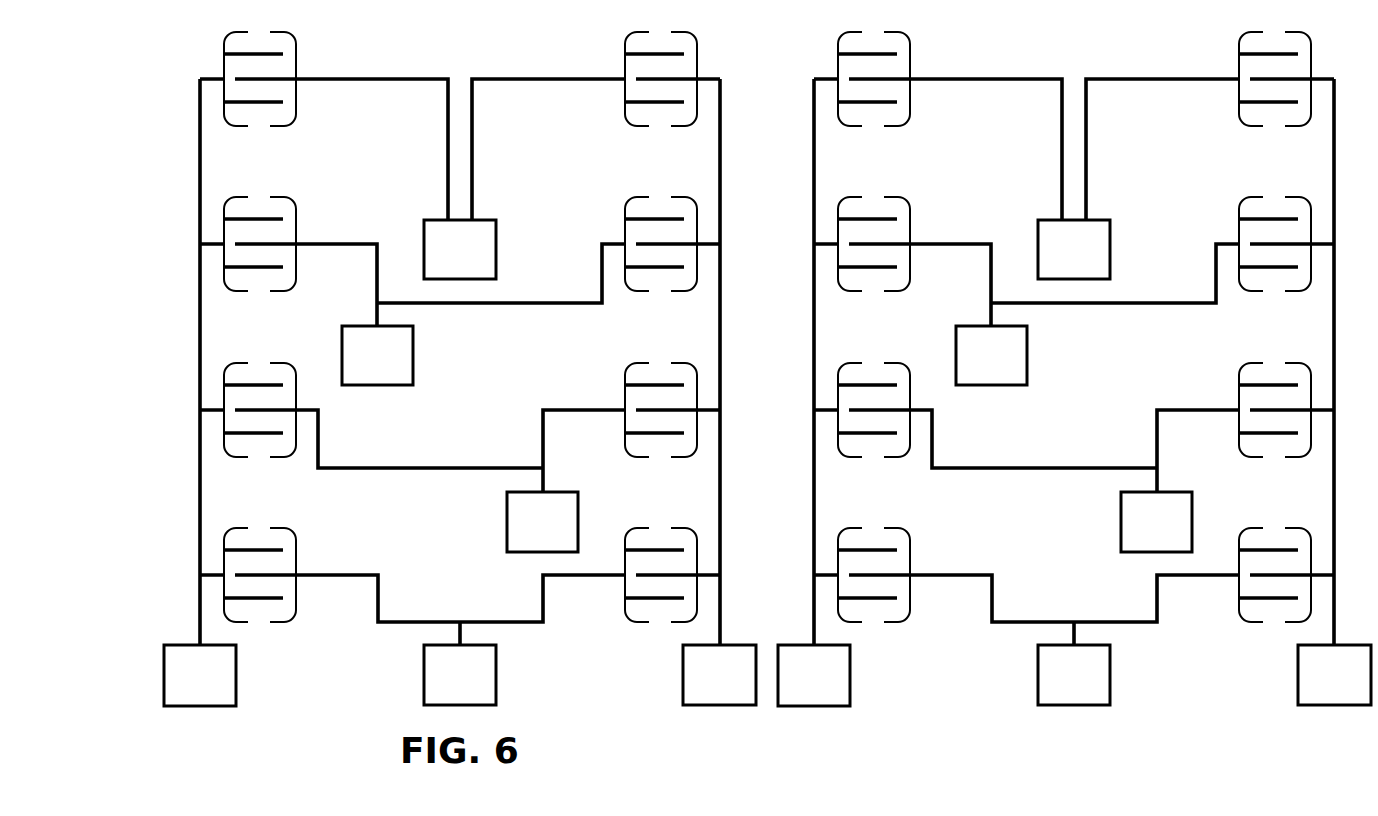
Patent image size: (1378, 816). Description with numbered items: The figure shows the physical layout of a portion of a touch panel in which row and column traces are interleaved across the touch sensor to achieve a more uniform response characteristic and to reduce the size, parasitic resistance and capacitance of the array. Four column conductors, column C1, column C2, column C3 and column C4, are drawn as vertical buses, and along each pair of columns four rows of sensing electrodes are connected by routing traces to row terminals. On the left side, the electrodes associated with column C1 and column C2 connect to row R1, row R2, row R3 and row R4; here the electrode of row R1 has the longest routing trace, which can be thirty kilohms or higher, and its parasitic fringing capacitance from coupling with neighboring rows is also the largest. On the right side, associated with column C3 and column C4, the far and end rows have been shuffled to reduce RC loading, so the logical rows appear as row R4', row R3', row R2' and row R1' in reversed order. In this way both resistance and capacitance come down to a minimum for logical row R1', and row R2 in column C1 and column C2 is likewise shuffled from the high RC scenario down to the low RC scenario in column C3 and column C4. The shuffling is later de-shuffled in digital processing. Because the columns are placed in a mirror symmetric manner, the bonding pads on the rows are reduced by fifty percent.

The row R1 is at (460, 249).
The row R2 is at (377, 355).
The row R3 is at (542, 522).
The row R4 is at (460, 675).
The column C1 is at (200, 675).
The column C2 is at (719, 675).
The column C3 is at (814, 675).
The column C4 is at (1334, 675).
The logical row R1' is at (1074, 675).
The logical row R2' is at (1156, 522).
The logical row R3' is at (991, 355).
The logical row R4' is at (1074, 249).